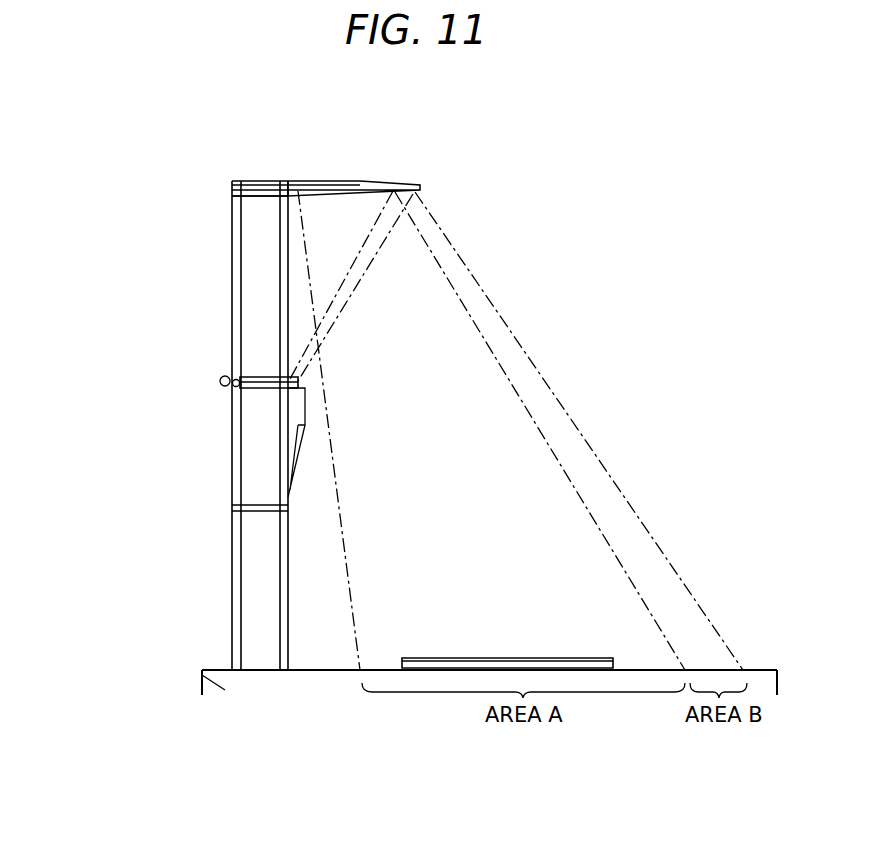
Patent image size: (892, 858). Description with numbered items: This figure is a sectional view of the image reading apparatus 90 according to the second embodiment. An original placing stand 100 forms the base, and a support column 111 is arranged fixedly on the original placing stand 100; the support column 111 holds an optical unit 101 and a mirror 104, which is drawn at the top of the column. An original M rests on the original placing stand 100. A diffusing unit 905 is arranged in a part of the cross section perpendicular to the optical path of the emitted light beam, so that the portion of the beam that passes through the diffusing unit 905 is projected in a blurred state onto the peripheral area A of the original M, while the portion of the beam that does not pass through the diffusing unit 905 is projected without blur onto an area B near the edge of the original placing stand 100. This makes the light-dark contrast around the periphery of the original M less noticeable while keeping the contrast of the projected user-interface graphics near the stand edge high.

The original placing stand 100 is at (215, 688).
The support column 111 is at (252, 585).
The optical unit 101 is at (262, 447).
The mirror 104 is at (360, 183).
The diffusing unit 905 is at (265, 378).
The original M is at (570, 660).
The image reading apparatus 90 is at (604, 318).